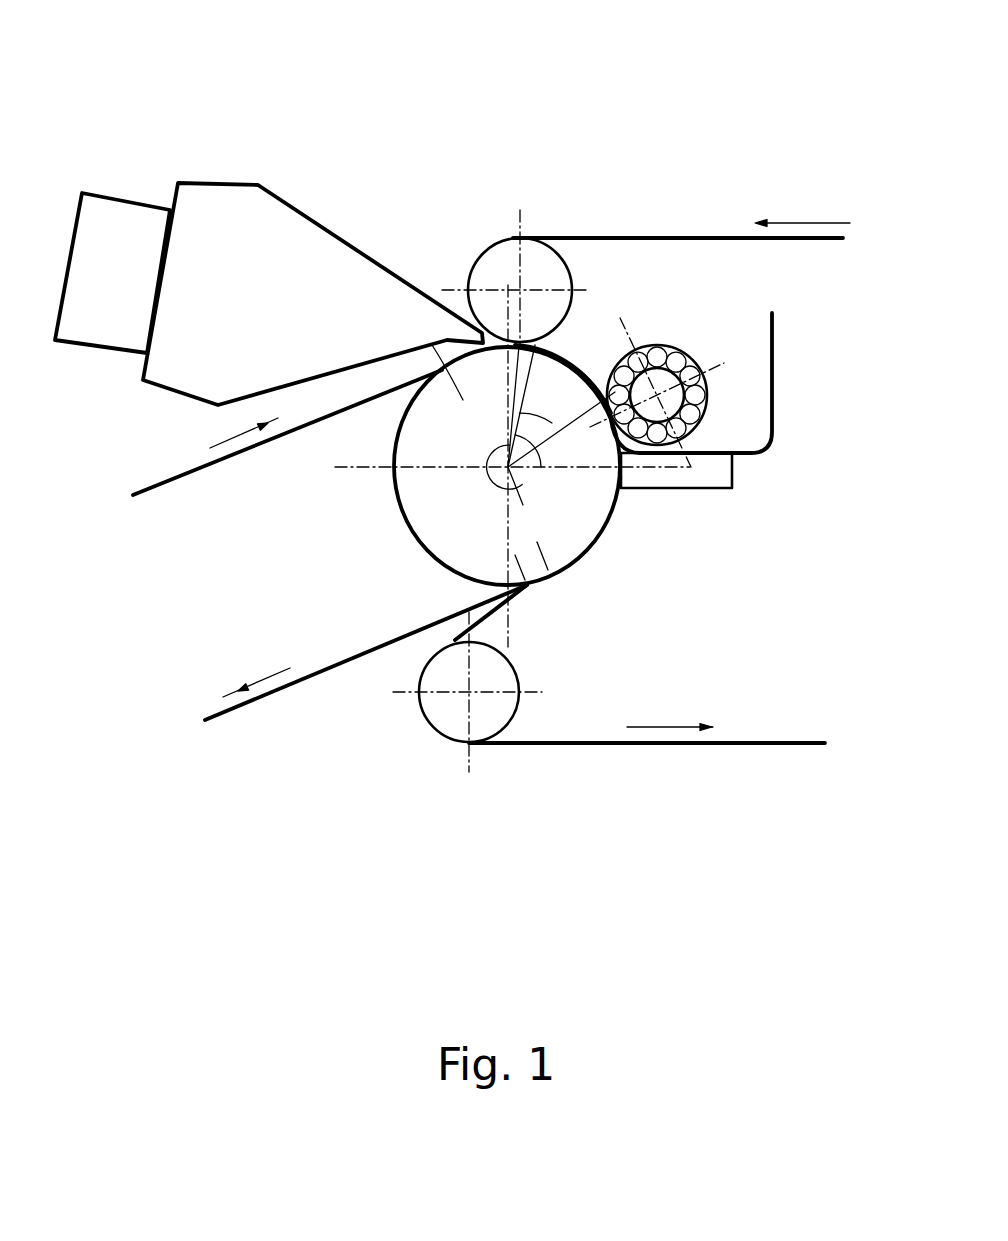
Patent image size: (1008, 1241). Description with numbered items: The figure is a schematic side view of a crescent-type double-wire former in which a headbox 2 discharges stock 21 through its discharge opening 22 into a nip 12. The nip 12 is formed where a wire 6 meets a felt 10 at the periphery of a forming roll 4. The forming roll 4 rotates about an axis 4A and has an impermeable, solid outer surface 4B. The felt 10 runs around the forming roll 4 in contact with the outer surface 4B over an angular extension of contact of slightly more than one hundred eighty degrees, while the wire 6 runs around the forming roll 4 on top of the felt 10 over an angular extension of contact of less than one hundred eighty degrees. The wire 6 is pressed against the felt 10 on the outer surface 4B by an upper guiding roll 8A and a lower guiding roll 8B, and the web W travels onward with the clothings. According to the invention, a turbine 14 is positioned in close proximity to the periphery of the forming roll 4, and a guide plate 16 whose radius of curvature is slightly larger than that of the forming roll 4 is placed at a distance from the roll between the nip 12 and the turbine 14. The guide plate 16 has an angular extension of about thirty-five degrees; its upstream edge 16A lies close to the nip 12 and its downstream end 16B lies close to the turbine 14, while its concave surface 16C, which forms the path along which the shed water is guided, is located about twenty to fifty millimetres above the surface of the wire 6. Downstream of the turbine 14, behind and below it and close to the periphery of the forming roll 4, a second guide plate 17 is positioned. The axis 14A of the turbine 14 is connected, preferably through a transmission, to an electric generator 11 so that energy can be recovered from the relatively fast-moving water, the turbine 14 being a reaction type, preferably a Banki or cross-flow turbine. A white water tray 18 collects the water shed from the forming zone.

The headbox 2 is at (247, 148).
The stock 21 is at (455, 332).
The discharge opening 22 is at (462, 333).
The forming roll 4 is at (462, 493).
The axis 4A is at (560, 502).
The outer surface 4B is at (432, 550).
The wire 6 is at (687, 237).
The upper guiding roll 8A is at (538, 263).
The lower guiding roll 8B is at (472, 725).
The felt 10 is at (163, 478).
The electric generator 11 is at (713, 474).
The nip 12 is at (520, 344).
The turbine 14 is at (660, 345).
The axis of the turbine 14A is at (688, 411).
The guide plate 16 is at (575, 348).
The upstream edge 16A is at (550, 346).
The downstream end 16B is at (659, 376).
The concave surface 16C is at (545, 478).
The second guide plate 17 is at (630, 452).
The white water tray 18 is at (776, 382).
The coated web W is at (432, 645).